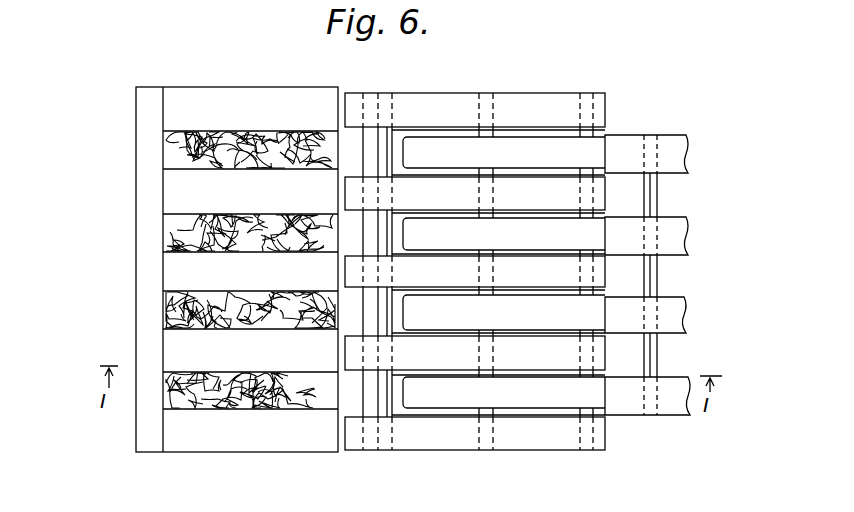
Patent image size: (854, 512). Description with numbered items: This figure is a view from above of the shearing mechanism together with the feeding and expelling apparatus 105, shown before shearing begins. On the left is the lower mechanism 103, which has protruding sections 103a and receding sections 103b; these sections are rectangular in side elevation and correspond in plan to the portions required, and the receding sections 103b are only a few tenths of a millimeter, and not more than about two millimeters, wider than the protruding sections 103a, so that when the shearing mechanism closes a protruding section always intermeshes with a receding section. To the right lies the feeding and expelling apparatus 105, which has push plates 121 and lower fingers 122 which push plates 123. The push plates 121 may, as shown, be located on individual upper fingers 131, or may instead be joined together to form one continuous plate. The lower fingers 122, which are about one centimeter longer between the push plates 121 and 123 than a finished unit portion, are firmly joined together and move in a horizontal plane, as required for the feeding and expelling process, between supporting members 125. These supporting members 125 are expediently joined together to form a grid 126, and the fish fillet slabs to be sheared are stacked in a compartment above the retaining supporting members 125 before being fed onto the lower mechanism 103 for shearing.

The lower mechanism 103 is at (148, 223).
The protruding sections 103a is at (199, 98).
The receding sections 103b is at (173, 169).
The feeding and expelling apparatus 105 is at (665, 225).
The push plates 121 is at (605, 130).
The lower fingers 122 is at (525, 105).
The push plates 123 is at (403, 140).
The supporting members 125 is at (407, 97).
The grid 126 is at (432, 363).
The upper fingers 131 is at (625, 145).